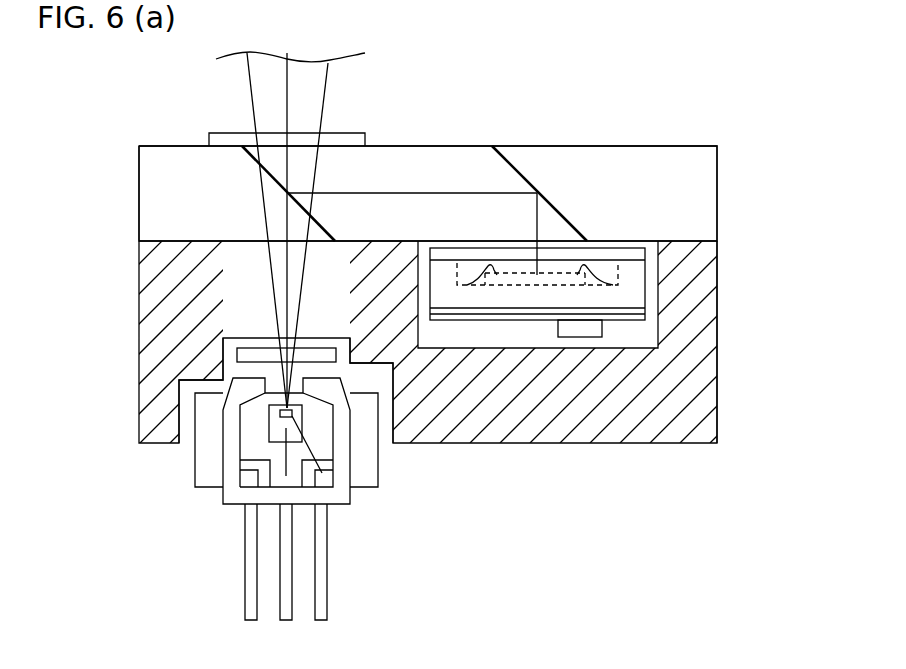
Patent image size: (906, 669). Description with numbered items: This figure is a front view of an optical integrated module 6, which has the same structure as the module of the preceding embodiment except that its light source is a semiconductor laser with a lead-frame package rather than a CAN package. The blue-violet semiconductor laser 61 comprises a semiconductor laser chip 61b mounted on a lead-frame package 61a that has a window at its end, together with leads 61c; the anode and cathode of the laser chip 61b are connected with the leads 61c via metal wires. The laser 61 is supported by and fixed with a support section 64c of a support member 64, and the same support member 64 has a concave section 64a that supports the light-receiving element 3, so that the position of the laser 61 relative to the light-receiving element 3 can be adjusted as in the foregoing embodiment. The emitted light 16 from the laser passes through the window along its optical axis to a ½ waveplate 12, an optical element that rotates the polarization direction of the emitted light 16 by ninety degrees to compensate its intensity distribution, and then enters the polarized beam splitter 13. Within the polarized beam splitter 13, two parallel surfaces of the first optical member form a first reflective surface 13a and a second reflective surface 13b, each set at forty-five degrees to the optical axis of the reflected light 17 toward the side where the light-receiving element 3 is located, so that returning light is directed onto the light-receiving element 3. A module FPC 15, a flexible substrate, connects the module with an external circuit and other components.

The light-receiving element 3 is at (646, 272).
The optical integrated module 6 is at (667, 60).
The ½ waveplate 12 is at (336, 363).
The polarized beam splitter 13 is at (138, 213).
The first reflective surface 13a is at (273, 187).
The second reflective surface 13b is at (534, 186).
The module FPC 15 is at (647, 312).
The emitted light 16 is at (287, 76).
The reflected light 17 is at (450, 193).
The blue-violet semiconductor laser 61 is at (196, 517).
The lead-frame package 61a is at (230, 493).
The semiconductor laser chip 61b is at (305, 423).
The leads 61c is at (244, 597).
The support member 64 is at (138, 272).
The concave section 64a is at (652, 335).
The support section 64c is at (385, 422).